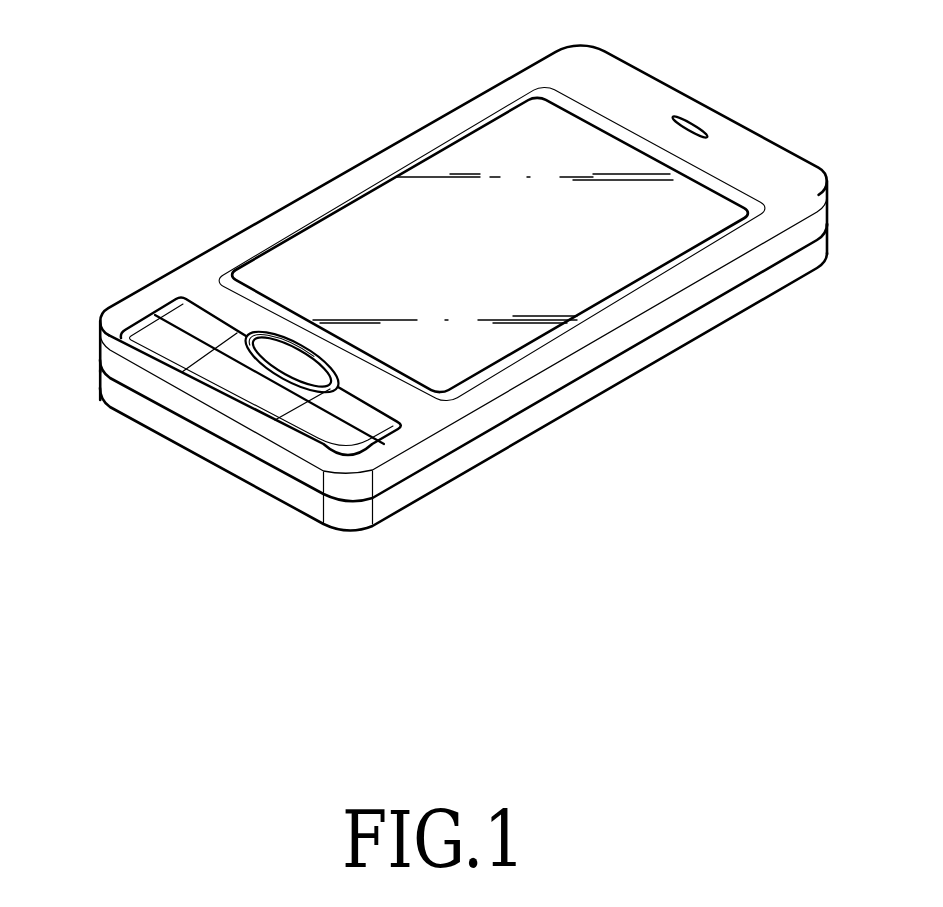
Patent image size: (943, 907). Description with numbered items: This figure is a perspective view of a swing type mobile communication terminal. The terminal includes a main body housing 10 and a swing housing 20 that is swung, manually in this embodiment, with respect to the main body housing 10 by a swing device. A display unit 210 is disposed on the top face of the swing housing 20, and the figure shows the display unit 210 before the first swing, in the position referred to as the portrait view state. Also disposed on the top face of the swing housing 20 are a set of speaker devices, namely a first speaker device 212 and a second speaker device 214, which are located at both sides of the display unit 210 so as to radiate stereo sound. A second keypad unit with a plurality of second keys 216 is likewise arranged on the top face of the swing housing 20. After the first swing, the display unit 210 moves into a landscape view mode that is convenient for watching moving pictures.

The main body housing 10 is at (617, 422).
The swing housing 20 is at (341, 139).
The display unit 210 is at (502, 140).
The first speaker device 212 is at (690, 127).
The second speaker device 214 is at (284, 355).
The second keys 216 is at (178, 315).